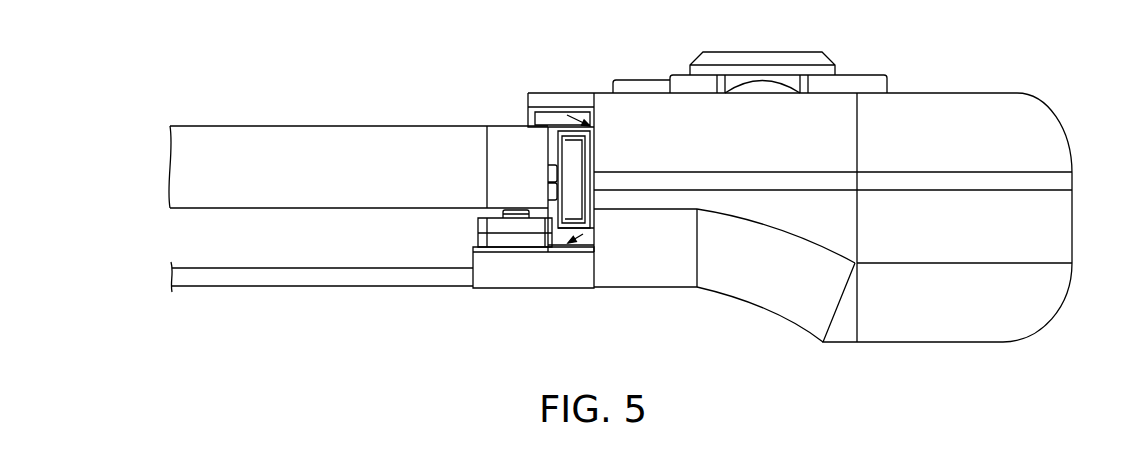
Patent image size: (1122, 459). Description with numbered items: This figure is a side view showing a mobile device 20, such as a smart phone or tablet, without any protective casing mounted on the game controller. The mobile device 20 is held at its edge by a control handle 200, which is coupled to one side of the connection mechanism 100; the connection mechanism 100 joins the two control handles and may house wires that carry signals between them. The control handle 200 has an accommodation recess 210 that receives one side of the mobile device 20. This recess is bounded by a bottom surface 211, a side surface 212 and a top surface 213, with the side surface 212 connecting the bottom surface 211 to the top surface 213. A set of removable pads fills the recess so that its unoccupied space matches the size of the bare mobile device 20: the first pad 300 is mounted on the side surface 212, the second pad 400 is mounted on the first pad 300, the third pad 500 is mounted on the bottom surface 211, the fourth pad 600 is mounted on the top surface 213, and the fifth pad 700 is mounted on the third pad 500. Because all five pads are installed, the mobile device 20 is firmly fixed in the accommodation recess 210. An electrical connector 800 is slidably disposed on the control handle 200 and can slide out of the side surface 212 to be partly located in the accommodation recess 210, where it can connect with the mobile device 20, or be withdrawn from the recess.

The mobile device 20 is at (233, 143).
The connection mechanism 100 is at (234, 278).
The control handle 200 is at (1003, 118).
The accommodation recess 210 is at (460, 221).
The bottom surface 211 is at (593, 228).
The side surface 212 is at (586, 153).
The top surface 213 is at (596, 133).
The first pad 300 is at (587, 198).
The second pad 400 is at (570, 175).
The third pad 500 is at (530, 242).
The fourth pad 600 is at (555, 120).
The fifth pad 700 is at (513, 227).
The electrical connector 800 is at (548, 172).